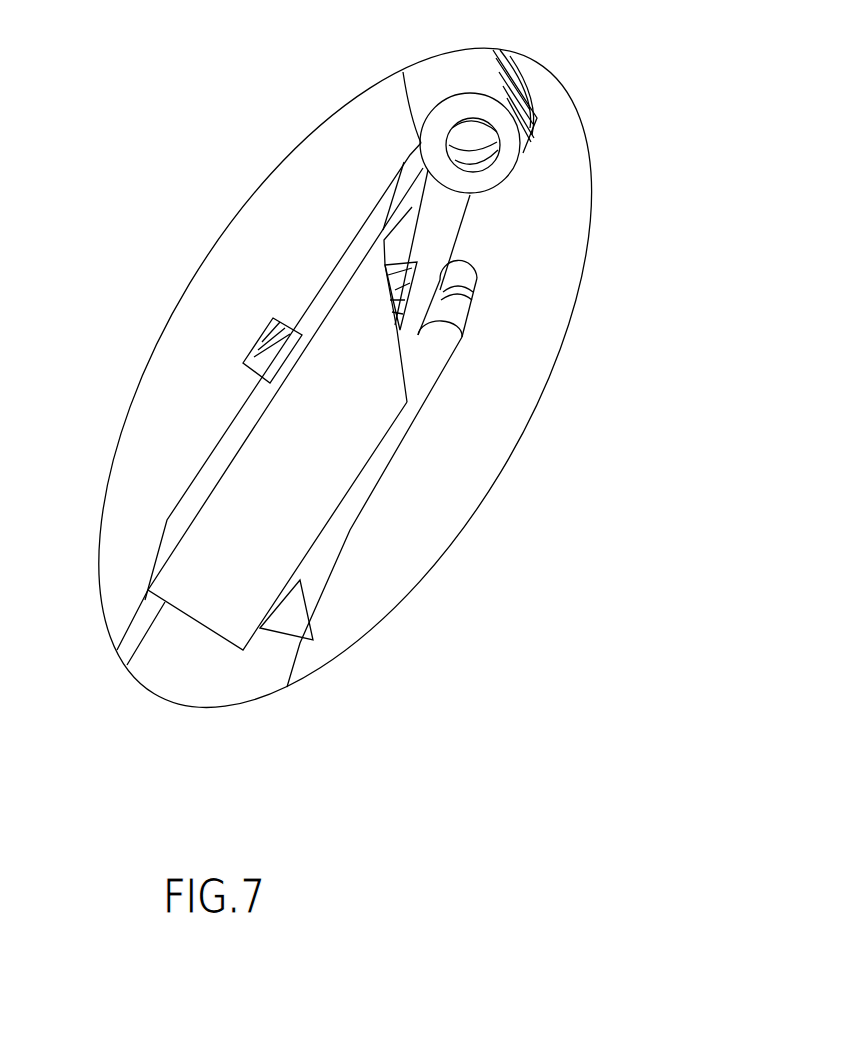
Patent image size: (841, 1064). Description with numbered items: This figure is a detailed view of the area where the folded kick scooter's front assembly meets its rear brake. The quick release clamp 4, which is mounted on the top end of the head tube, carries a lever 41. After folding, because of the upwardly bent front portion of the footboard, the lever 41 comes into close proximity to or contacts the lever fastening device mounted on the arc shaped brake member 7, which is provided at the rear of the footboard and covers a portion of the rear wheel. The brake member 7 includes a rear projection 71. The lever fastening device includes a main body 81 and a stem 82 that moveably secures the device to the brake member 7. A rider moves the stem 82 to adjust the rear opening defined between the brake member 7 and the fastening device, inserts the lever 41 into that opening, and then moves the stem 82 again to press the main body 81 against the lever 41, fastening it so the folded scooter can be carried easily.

The quick release clamp 4 is at (478, 90).
The lever 41 is at (457, 228).
The rear projection 71 is at (457, 312).
The main body 81 is at (350, 242).
The stem 82 is at (262, 342).
The brake member 7 is at (205, 683).